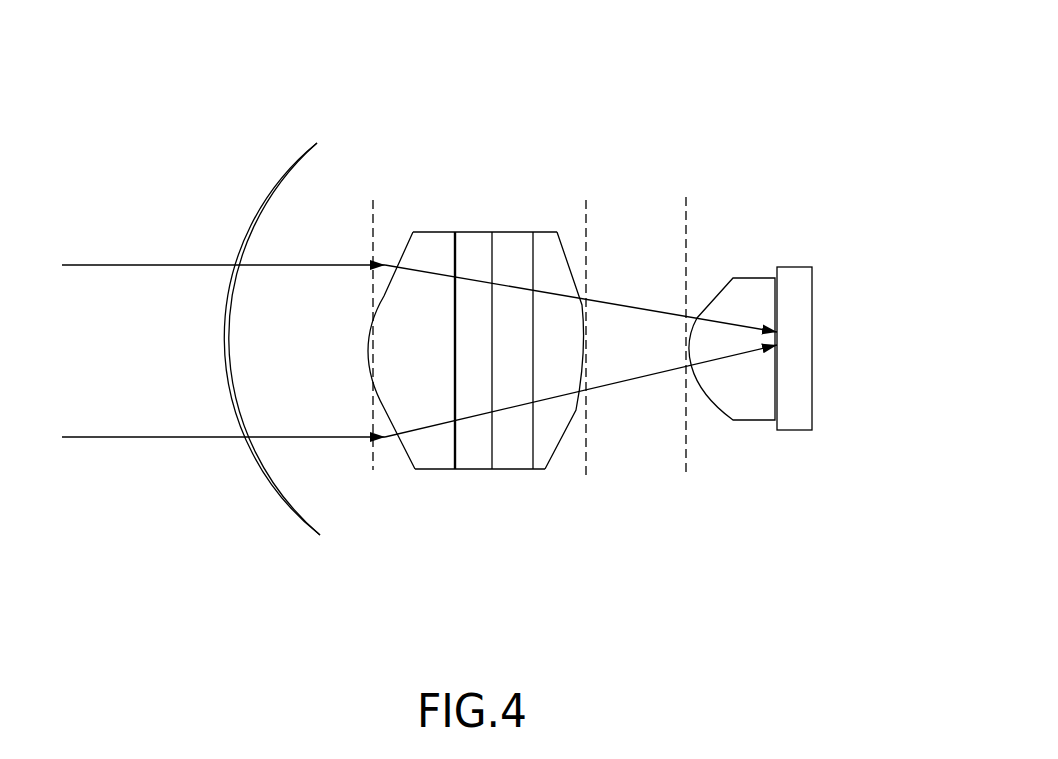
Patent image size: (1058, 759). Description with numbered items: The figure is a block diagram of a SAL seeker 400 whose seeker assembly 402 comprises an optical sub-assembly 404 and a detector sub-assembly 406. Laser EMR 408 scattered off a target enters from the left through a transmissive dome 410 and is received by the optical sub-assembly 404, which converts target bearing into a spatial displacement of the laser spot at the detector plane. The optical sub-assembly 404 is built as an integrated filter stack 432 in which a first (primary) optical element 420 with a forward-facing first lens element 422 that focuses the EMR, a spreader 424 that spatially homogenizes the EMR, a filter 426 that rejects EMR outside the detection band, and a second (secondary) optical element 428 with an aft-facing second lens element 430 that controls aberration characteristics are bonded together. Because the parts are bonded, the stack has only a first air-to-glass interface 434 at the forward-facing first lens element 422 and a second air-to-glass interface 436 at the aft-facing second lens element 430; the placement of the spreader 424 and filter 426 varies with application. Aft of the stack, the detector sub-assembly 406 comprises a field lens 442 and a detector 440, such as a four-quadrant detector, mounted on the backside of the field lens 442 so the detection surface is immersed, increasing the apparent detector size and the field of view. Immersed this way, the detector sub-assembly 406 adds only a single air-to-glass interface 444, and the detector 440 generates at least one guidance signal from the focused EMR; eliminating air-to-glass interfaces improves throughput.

The SAL seeker 400 is at (803, 92).
The seeker assembly 402 is at (662, 550).
The optical sub-assembly 404 is at (373, 512).
The detector sub-assembly 406 is at (818, 482).
The EMR 408 is at (173, 268).
The transmissive dome 410 is at (265, 481).
The first (primary) optical element 420 is at (423, 469).
The forward-facing first lens element 422 is at (390, 445).
The spreader 424 is at (470, 469).
The filter 426 is at (513, 469).
The second (secondary) optical element 428 is at (545, 457).
The aft-facing second lens element 430 is at (578, 413).
The integrated filter stack 432 is at (477, 217).
The first air-to-glass interface 434 is at (373, 230).
The second air-to-glass interface 436 is at (586, 222).
The detector 440 is at (812, 322).
The field lens 442 is at (750, 278).
The single air-to-glass interface 444 is at (686, 222).